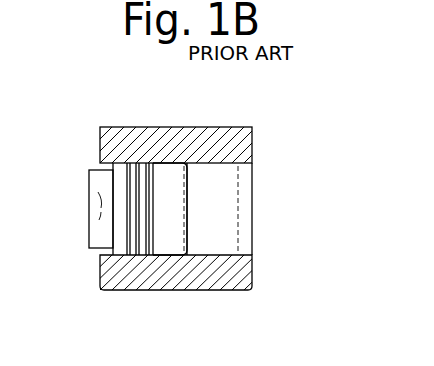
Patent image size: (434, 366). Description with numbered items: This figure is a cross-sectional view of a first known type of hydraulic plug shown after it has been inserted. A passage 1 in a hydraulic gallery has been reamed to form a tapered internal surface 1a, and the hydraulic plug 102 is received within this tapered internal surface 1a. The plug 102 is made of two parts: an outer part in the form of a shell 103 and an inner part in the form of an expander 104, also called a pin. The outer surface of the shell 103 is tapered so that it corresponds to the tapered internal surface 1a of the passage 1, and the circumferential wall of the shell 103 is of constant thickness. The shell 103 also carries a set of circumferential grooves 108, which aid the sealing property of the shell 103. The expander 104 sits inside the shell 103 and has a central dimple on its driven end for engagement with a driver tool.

The passage 1 is at (244, 173).
The tapered internal surface 1a is at (210, 253).
The hydraulic plug 102 is at (190, 304).
The shell 103 is at (178, 205).
The expander 104 is at (89, 231).
The circumferential grooves 108 is at (136, 163).